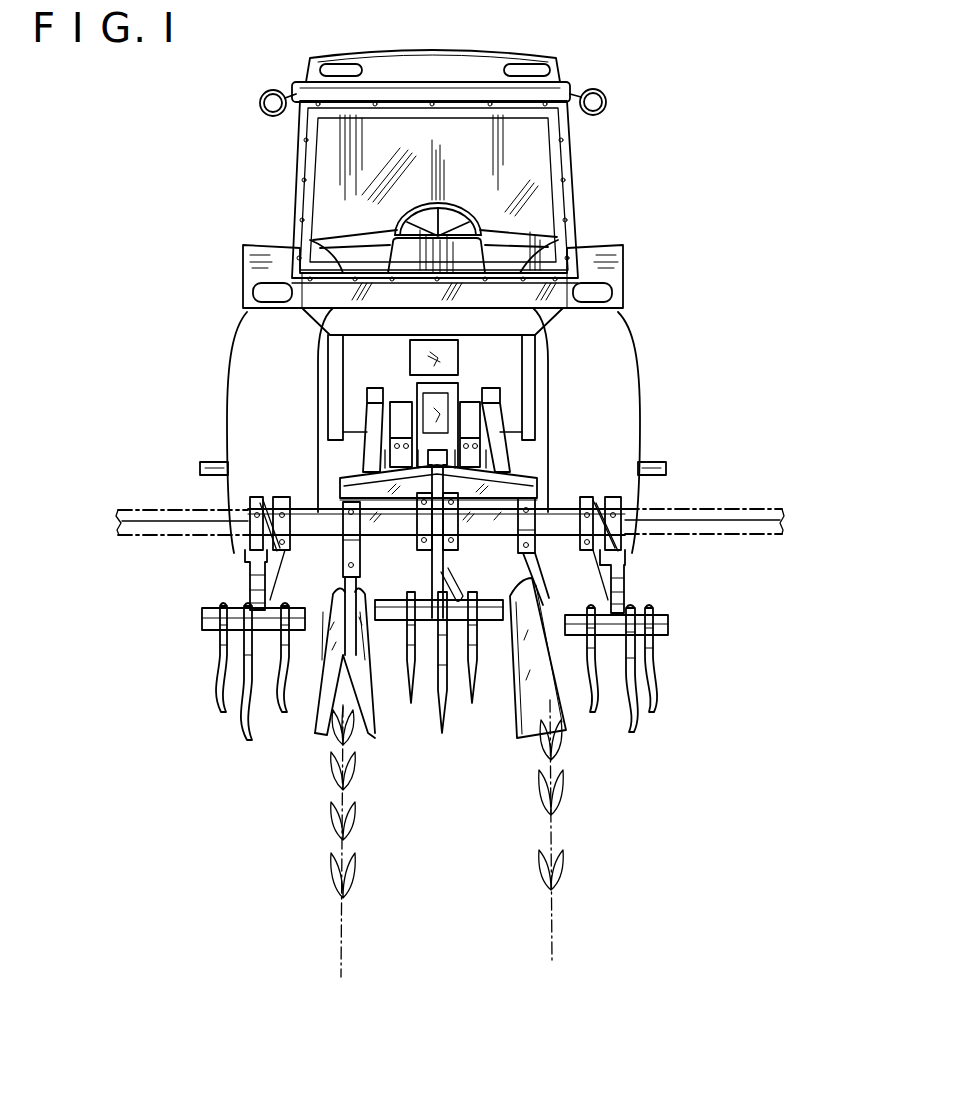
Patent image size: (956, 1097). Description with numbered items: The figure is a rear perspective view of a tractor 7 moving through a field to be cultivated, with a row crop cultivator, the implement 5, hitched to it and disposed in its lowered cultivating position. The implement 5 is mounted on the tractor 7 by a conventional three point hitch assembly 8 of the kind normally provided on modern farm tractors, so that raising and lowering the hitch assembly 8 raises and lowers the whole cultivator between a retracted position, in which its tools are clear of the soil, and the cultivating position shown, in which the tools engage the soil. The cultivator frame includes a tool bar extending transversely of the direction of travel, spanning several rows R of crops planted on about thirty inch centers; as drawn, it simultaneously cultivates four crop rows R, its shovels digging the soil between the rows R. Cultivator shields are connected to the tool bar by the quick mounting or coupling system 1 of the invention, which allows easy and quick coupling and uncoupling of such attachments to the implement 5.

The mounting or coupling system 1 is at (240, 506).
The implement 5 is at (645, 518).
The tractor 7 is at (716, 172).
The three point hitch assembly 8 is at (520, 410).
The rows of crops R is at (360, 840).